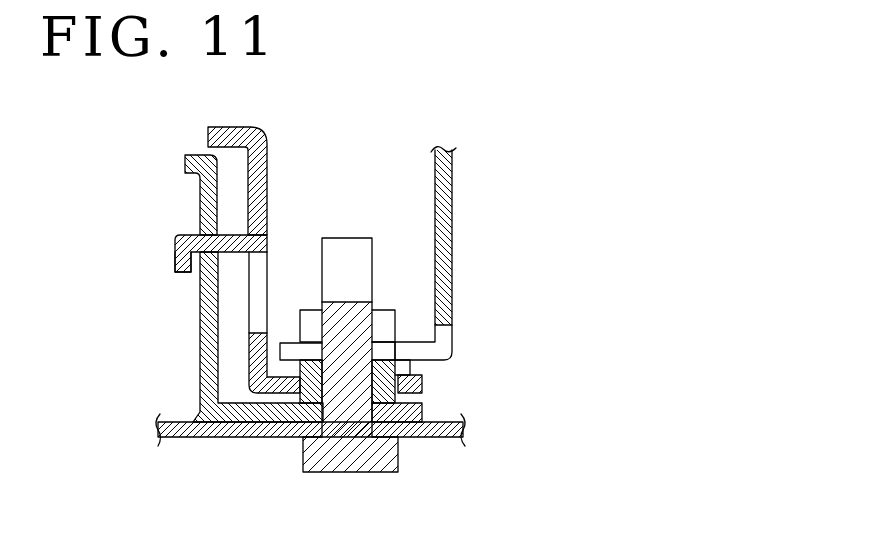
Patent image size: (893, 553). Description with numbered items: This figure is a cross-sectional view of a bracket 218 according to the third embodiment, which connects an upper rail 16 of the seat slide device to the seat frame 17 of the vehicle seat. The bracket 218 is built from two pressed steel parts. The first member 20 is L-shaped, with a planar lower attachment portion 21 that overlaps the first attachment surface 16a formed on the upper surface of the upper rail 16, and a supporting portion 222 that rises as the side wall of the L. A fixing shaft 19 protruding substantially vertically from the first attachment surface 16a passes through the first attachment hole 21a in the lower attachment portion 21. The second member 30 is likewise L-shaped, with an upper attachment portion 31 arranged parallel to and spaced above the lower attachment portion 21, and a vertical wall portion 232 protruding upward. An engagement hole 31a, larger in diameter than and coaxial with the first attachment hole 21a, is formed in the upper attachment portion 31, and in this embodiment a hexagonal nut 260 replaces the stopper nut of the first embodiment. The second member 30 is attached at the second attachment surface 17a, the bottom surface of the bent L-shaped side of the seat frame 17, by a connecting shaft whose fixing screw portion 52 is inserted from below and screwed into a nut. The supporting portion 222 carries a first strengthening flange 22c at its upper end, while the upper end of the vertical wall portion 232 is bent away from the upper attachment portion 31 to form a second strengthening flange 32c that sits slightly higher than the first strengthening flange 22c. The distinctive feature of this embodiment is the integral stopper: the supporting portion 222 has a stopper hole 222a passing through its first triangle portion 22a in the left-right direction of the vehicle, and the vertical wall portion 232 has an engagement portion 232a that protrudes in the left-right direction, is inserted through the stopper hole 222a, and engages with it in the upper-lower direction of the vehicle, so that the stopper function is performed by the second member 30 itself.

The bracket 218 is at (481, 170).
The second strengthening flange 32c is at (207, 137).
The first strengthening flange 22c is at (185, 170).
The vertical wall portion 232 is at (249, 186).
The stopper hole 222a is at (177, 240).
The engagement portion 232a is at (175, 270).
The supporting portion 222 is at (198, 320).
The first triangle portion 22a is at (207, 350).
The first member 20 is at (178, 422).
The second member 30 is at (232, 405).
The upper attachment portion 31 is at (258, 395).
The lower attachment portion 21 is at (290, 393).
The first attachment hole 21a is at (326, 437).
The engagement hole 31a is at (376, 424).
The upper rail 16 is at (451, 437).
The first attachment surface 16a is at (445, 420).
The fixing screw portion 52 is at (360, 257).
The fixing shaft 19 is at (374, 310).
The hexagonal nut 260 is at (385, 352).
The seat frame 17 is at (452, 217).
The second attachment surface 17a is at (437, 366).